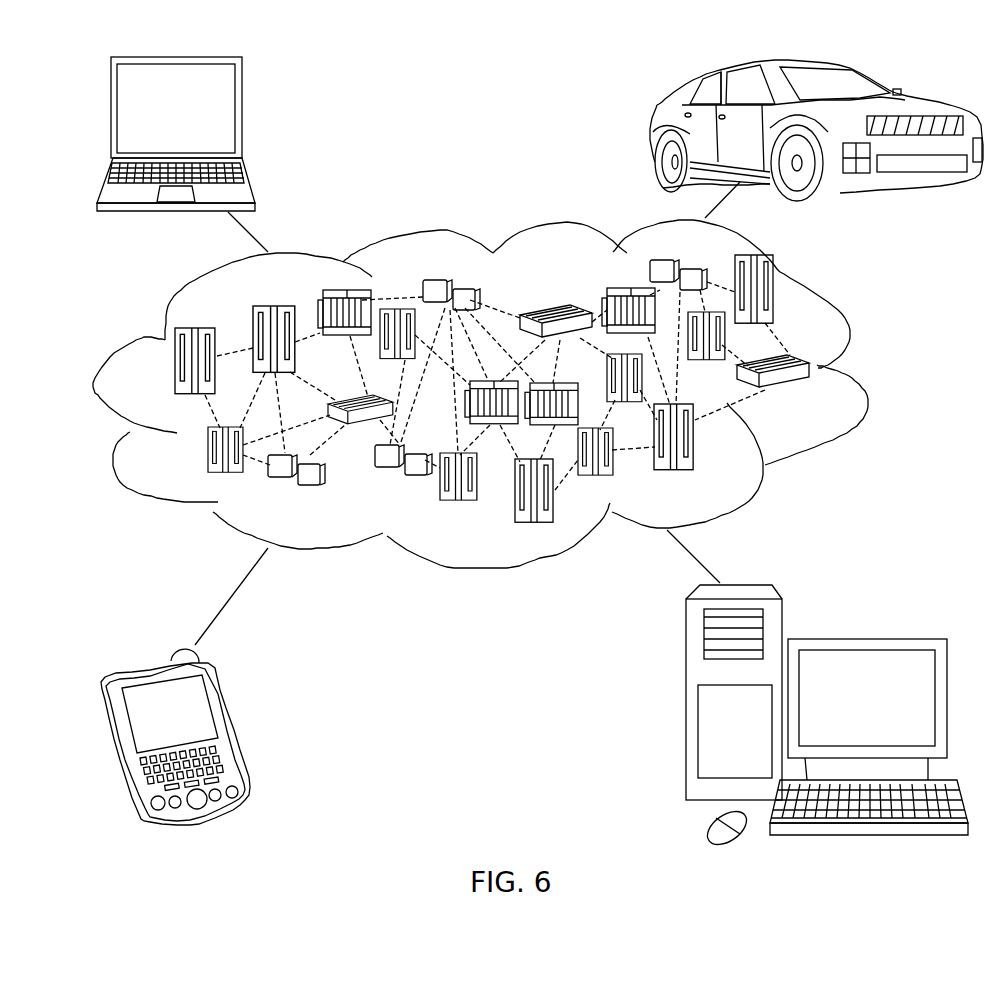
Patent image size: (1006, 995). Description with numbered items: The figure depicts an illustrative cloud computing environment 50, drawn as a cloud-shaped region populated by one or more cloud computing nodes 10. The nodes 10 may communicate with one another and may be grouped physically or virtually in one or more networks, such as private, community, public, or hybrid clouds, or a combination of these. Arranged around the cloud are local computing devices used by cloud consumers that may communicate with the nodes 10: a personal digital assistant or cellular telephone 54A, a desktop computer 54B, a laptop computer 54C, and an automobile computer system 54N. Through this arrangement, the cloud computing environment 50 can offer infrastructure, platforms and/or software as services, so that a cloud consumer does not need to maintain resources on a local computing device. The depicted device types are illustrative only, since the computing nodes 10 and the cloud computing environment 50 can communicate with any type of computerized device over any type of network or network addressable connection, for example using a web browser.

The cloud computing node 10 is at (814, 400).
The cloud computing environment 50 is at (862, 372).
The personal digital assistant or cellular telephone 54A is at (228, 728).
The desktop computer 54B is at (868, 635).
The laptop computer 54C is at (242, 116).
The automobile computer system 54N is at (655, 130).